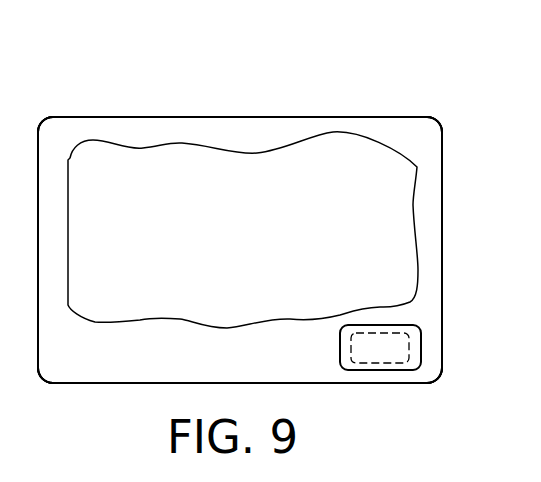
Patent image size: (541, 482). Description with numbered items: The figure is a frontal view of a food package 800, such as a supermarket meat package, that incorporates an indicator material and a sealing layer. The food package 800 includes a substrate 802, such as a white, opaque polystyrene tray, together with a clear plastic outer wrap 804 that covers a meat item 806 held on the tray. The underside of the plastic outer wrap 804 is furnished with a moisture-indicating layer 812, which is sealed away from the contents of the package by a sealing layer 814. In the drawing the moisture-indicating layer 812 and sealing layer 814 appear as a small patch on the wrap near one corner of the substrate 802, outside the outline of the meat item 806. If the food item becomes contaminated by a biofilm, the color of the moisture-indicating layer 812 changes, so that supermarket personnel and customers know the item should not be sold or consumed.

The food package 800 is at (99, 80).
The substrate 802 is at (441, 227).
The plastic outer wrap 804 is at (202, 363).
The meat item 806 is at (310, 282).
The moisture-indicating layer 812 is at (408, 335).
The sealing layer 814 is at (374, 370).